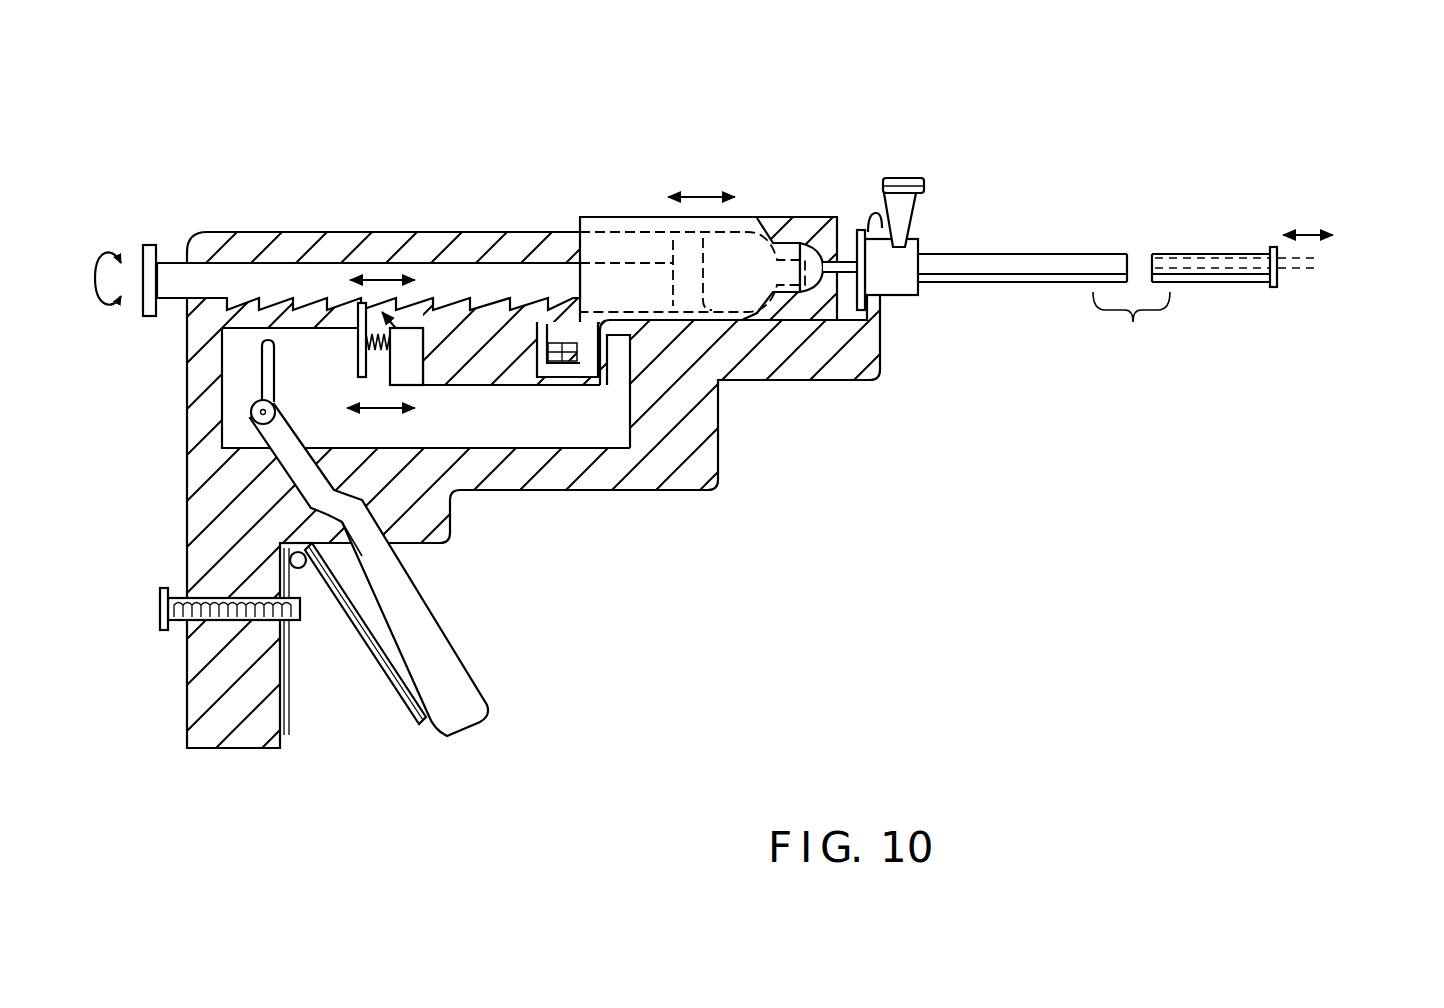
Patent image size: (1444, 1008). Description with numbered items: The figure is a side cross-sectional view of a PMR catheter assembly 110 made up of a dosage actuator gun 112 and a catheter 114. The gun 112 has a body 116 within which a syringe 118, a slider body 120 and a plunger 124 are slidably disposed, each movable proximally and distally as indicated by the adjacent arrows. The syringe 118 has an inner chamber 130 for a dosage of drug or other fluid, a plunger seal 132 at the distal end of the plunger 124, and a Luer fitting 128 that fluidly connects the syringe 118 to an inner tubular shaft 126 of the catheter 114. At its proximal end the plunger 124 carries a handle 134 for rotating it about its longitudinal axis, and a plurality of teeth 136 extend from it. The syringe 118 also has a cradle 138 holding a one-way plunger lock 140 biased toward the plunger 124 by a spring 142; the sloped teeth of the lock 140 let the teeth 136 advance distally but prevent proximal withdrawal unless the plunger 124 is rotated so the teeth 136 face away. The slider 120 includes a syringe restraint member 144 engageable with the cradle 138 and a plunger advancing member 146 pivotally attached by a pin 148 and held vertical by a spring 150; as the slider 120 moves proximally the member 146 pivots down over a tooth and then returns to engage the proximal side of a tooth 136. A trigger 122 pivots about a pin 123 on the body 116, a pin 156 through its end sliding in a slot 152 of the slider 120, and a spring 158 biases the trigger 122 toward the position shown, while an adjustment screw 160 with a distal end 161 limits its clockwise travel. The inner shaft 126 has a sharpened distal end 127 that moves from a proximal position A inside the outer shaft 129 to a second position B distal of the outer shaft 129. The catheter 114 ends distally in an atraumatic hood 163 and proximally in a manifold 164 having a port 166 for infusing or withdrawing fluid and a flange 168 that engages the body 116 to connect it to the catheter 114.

The PMR catheter assembly 110 is at (815, 163).
The dosage actuator gun 112 is at (487, 195).
The catheter 114 is at (1060, 205).
The body 116 is at (690, 455).
The syringe 118 is at (755, 217).
The slider body 120 is at (553, 425).
The trigger 122 is at (470, 690).
The pin 123 is at (342, 525).
The plunger 124 is at (290, 285).
The inner tubular shaft 126 is at (852, 255).
The sharpened distal end 127 is at (1318, 268).
The Luer fitting 128 is at (790, 243).
The outer shaft 129 is at (1053, 283).
The inner chamber 130 is at (828, 342).
The plunger seal 132 is at (698, 322).
The handle 134 is at (150, 244).
The teeth 136 is at (245, 300).
The cradle 138 is at (578, 378).
The one-way plunger lock 140 is at (555, 335).
The spring 142 is at (622, 380).
The syringe restraint member 144 is at (612, 345).
The plunger advancing member 146 is at (362, 300).
The pin 148 is at (372, 345).
The spring 150 is at (410, 385).
The slot 152 is at (260, 345).
The pin 156 is at (252, 418).
The spring 158 is at (423, 714).
The adjustment screw 160 is at (183, 633).
The distal end 161 is at (300, 620).
The atraumatic hood 163 is at (1273, 247).
The manifold 164 is at (907, 255).
The port 166 is at (905, 185).
The flange 168 is at (873, 308).
The proximal position A is at (1230, 252).
The second position B is at (1292, 268).